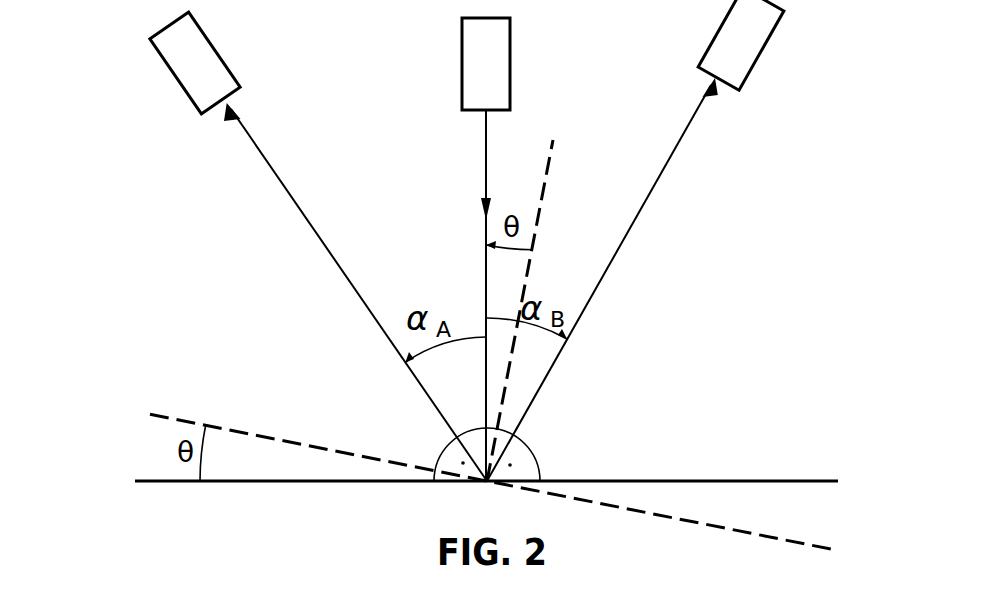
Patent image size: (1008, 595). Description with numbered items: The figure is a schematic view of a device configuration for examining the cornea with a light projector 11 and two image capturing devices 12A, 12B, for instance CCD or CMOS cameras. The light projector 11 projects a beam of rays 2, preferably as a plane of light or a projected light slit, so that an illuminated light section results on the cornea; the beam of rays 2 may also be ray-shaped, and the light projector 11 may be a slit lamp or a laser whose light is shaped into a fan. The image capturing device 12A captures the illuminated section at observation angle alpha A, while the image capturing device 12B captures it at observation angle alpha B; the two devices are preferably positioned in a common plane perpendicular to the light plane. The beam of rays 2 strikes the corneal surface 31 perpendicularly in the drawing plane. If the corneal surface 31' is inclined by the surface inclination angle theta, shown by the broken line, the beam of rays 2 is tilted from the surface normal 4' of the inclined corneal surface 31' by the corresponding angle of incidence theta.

The beam of rays 2 is at (486, 175).
The surface normal 4' is at (552, 310).
The light projector 11 is at (497, 65).
The image capturing device 12A is at (190, 67).
The image capturing device 12B is at (747, 50).
The corneal surface 31 is at (486, 441).
The inclined corneal surface 31' is at (496, 481).